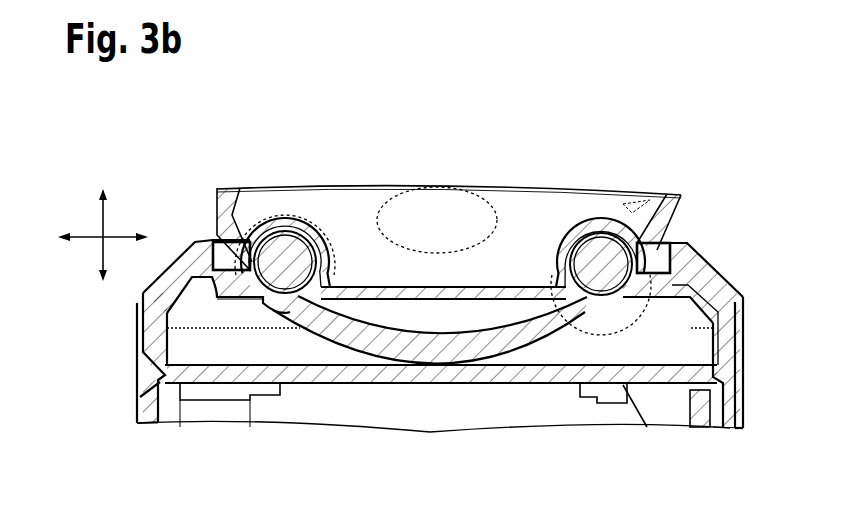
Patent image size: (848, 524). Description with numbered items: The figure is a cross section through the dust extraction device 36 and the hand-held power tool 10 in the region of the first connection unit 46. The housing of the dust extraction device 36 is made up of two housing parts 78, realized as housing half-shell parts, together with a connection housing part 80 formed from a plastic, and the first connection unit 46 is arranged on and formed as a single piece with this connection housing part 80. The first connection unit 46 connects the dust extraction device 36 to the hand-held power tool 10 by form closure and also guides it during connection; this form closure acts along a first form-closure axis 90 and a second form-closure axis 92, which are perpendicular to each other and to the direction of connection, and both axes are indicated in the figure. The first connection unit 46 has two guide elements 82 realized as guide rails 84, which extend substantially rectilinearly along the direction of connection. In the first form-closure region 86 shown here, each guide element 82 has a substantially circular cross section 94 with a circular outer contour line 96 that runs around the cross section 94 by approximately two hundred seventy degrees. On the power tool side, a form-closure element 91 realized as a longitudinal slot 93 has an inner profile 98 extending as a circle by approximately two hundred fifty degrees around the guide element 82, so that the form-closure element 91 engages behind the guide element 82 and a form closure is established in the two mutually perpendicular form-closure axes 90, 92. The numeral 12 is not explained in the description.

The hand-held power tool 10 is at (493, 145).
The retaining clip 12 is at (660, 235).
The dust extraction device 36 is at (735, 252).
The first connection unit 46 is at (205, 228).
The housing parts 78 is at (168, 425).
The connection housing part 80 is at (688, 250).
The guide elements 82 is at (447, 370).
The guide rails 84 is at (447, 370).
The first form-closure region 86 is at (287, 278).
The first form-closure axis 90 is at (102, 210).
The form-closure element 91 is at (442, 206).
The second form-closure axis 92 is at (82, 238).
The longitudinal slot 93 is at (345, 240).
The circular cross section 94 is at (245, 300).
The circular outer contour line 96 is at (258, 208).
The inner profile 98 is at (300, 222).